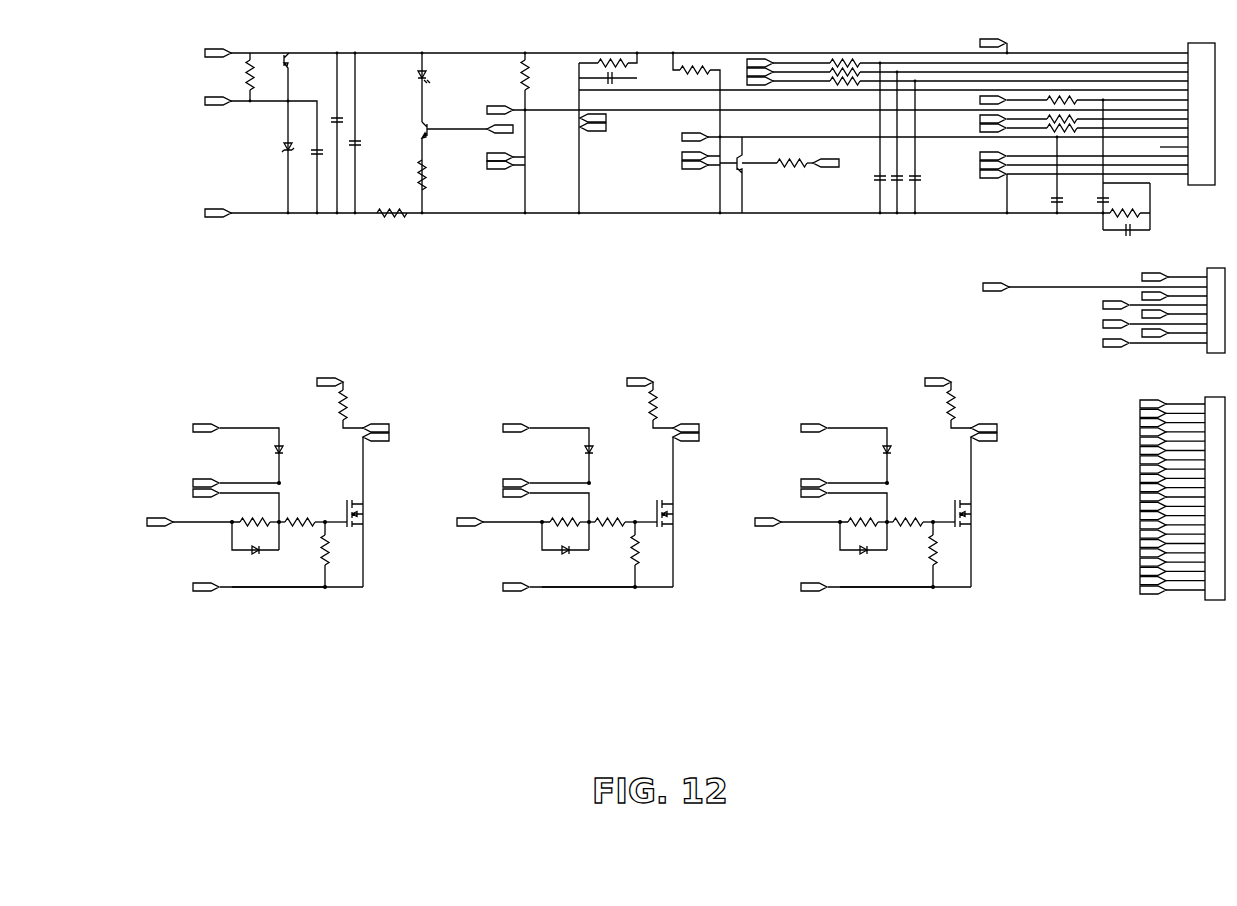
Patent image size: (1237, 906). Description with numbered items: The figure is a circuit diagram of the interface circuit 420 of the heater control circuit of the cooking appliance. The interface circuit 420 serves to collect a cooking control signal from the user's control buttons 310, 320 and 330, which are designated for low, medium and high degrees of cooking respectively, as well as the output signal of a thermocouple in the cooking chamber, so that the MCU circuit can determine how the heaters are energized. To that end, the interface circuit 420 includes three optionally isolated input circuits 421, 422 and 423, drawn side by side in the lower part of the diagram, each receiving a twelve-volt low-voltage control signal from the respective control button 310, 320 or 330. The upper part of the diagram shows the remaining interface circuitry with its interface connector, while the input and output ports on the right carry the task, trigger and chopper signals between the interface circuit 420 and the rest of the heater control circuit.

The control button 310 is at (170, 543).
The control button 320 is at (568, 522).
The control button 330 is at (884, 522).
The interface circuit 420 is at (118, 728).
The optionally isolated input circuit 421 is at (250, 606).
The optionally isolated input circuit 422 is at (566, 627).
The optionally isolated input circuit 423 is at (865, 627).